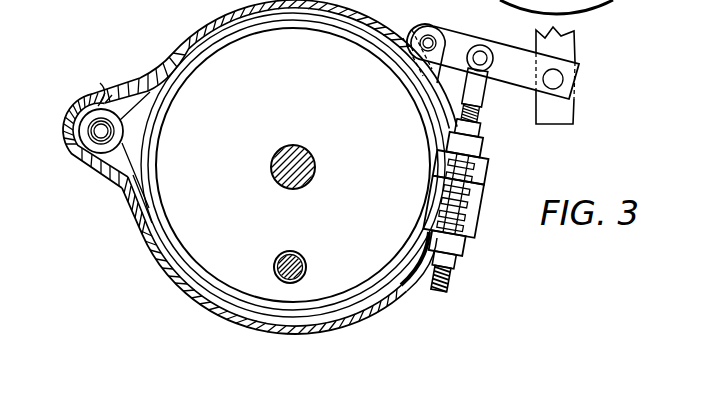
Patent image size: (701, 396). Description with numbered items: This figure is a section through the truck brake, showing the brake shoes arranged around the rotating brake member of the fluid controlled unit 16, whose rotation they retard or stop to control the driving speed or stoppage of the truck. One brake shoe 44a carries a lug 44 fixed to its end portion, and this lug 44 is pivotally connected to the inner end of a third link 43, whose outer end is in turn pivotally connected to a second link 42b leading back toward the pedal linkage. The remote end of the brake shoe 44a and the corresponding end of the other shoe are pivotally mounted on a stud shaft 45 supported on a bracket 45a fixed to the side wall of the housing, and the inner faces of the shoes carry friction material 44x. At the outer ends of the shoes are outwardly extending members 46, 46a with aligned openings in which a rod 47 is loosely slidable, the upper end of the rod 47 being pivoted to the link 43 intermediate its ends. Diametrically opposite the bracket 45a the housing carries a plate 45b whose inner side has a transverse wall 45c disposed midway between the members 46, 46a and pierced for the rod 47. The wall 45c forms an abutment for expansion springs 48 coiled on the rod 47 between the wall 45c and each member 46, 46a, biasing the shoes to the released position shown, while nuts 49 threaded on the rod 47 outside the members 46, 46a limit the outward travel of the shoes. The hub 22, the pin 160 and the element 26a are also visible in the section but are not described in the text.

The fluid controlled unit 16 is at (338, 275).
The shaft 22 is at (290, 184).
The pin 160 is at (305, 265).
The friction material 44x is at (209, 50).
The brake shoe 44a is at (318, 22).
The lug 44 is at (434, 29).
The stud shaft 45 is at (78, 166).
The bracket 45a is at (95, 82).
The plate 45b is at (484, 174).
The transverse wall 45c is at (482, 199).
The second link 42b is at (565, 53).
The third link 43 is at (566, 99).
The drum 26a is at (612, 3).
The expansion springs 48 is at (433, 203).
The nuts 49 is at (484, 131).
The outwardly extending member 46 is at (488, 148).
The outwardly extending member 46a is at (466, 253).
The rod 47 is at (452, 285).